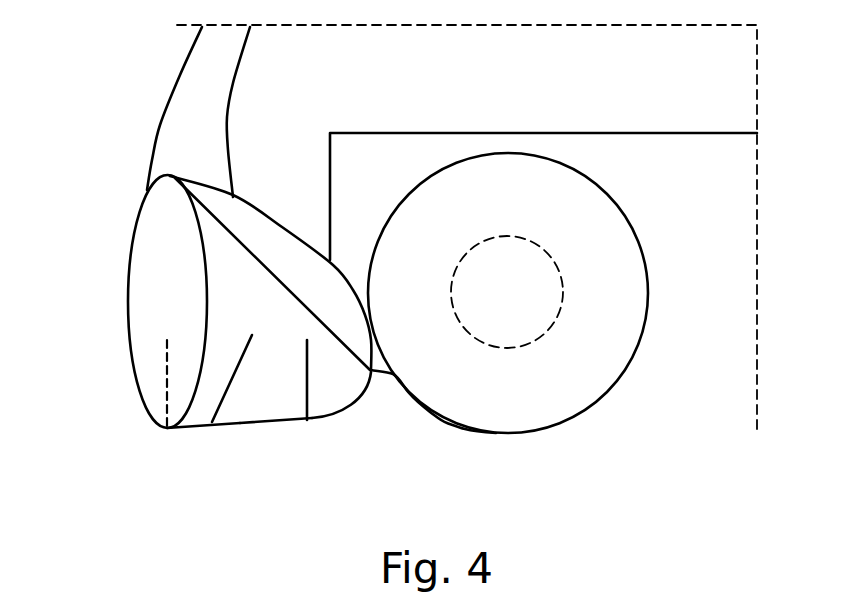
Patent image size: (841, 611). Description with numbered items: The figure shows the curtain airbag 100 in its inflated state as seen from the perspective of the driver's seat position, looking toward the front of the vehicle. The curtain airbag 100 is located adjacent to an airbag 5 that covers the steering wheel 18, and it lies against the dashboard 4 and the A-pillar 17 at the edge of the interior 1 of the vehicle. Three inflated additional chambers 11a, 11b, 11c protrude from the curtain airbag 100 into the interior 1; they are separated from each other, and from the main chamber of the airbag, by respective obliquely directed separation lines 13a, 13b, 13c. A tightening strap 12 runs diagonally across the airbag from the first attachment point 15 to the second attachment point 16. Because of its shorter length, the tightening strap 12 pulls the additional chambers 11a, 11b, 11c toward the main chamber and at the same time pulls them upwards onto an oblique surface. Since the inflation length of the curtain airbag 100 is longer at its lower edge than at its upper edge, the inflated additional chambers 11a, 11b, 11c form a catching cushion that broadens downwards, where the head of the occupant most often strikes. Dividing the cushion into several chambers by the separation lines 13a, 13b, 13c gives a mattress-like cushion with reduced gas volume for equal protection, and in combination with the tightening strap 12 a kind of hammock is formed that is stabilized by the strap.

The interior 1 is at (684, 297).
The dashboard 4 is at (363, 160).
The airbag 5 is at (580, 203).
The steering wheel 18 is at (567, 289).
The curtain airbag 100 is at (108, 242).
The A-pillar 17 is at (188, 100).
The first attachment point 15 is at (177, 178).
The tightening strap 12 is at (277, 275).
The second attachment point 16 is at (372, 372).
The additional chamber 11a is at (198, 417).
The additional chamber 11b is at (287, 408).
The additional chamber 11c is at (355, 387).
The separation line 13a is at (163, 403).
The separation line 13b is at (223, 408).
The separation line 13c is at (308, 402).